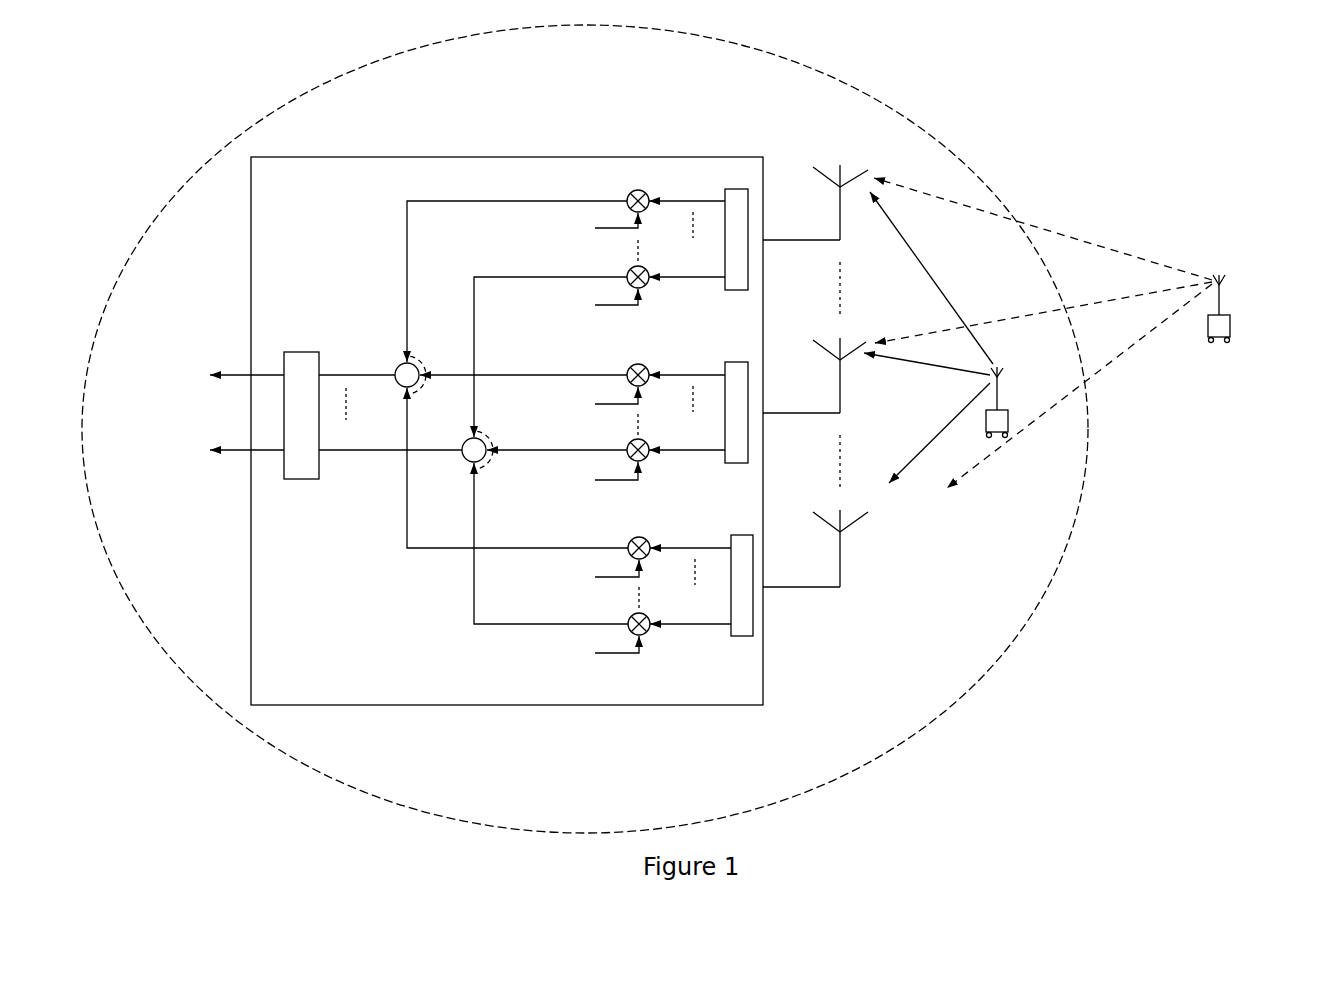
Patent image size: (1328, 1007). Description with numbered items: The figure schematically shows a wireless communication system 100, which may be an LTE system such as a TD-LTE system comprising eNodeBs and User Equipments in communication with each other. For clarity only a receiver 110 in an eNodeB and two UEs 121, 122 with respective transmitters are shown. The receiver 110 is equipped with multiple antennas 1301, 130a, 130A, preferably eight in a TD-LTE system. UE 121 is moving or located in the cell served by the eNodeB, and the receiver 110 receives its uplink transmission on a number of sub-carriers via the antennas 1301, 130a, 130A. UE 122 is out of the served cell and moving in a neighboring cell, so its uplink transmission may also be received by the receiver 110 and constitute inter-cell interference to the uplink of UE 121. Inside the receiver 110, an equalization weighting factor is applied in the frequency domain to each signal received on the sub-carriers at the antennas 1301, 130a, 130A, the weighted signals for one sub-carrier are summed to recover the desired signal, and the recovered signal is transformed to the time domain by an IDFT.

The wireless communication system 100 is at (1030, 155).
The receiver 110 is at (470, 431).
The antenna 1301 is at (834, 229).
The antenna 130a is at (834, 406).
The antenna 130A is at (833, 539).
The User Equipment 121 is at (1018, 403).
The User Equipment 122 is at (1233, 303).